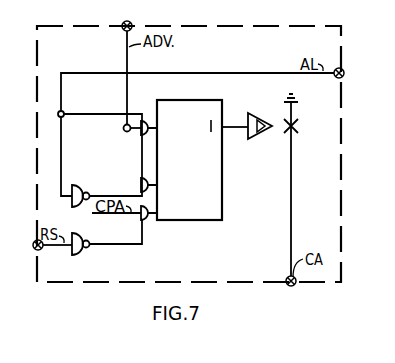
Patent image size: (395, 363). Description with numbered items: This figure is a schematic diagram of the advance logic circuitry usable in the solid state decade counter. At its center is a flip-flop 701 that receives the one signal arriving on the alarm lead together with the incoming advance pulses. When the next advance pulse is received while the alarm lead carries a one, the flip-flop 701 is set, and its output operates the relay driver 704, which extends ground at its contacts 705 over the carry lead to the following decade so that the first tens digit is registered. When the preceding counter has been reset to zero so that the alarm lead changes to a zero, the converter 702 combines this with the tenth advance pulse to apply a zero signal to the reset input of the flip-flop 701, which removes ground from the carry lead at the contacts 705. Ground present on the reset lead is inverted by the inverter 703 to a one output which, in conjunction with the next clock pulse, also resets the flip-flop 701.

The flip-flop 701 is at (189, 160).
The converter 702 is at (93, 178).
The inverter 703 is at (82, 253).
The relay driver 704 is at (268, 113).
The contacts 705 is at (295, 128).